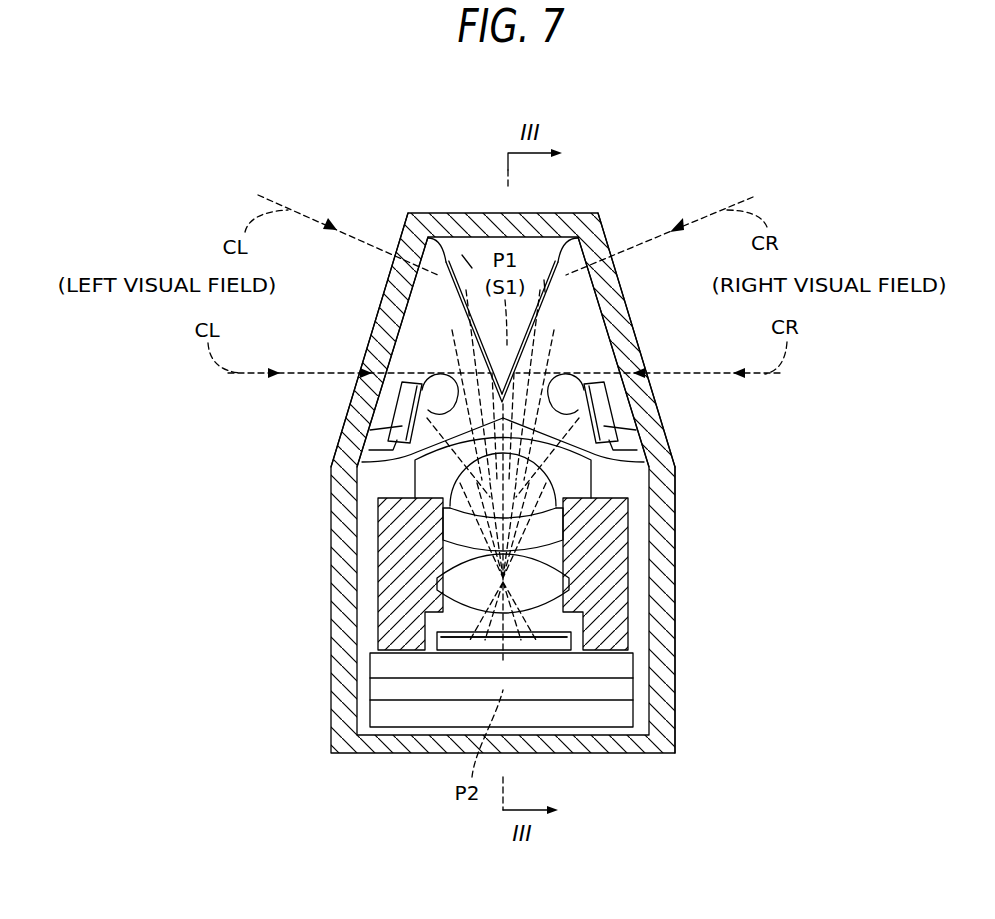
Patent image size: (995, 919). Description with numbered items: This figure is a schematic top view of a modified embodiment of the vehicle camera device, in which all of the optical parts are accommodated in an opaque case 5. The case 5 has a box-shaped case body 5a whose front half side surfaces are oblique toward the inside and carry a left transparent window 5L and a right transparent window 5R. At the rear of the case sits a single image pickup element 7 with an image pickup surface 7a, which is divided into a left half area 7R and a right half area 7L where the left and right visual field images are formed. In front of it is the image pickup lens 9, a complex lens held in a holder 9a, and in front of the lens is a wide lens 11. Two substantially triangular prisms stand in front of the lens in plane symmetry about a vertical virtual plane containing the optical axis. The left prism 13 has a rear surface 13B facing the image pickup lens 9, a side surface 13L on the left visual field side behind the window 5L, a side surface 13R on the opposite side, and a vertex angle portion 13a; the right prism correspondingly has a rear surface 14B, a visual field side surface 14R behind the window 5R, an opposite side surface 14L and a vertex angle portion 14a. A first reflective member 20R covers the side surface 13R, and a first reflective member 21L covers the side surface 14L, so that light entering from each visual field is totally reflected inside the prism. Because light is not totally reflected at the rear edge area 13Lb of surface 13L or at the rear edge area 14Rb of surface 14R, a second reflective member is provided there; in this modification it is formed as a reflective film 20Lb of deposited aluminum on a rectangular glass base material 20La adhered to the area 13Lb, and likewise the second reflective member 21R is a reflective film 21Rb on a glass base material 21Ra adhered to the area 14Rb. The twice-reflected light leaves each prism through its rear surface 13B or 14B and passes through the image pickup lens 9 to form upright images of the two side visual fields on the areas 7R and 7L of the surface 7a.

The case 5 is at (683, 647).
The left transparent window 5L is at (395, 300).
The right transparent window 5R is at (620, 303).
The case body 5a is at (667, 568).
The image pickup element 7 is at (415, 643).
The image pickup surface 7a is at (395, 630).
The right half area of lower half area 7L is at (470, 637).
The left half area of lower half area 7R is at (540, 633).
The image pickup lens 9 is at (470, 573).
The holder 9a is at (392, 595).
The wide lens 11 is at (380, 443).
The prism 13 is at (430, 296).
The vertex angle portion 13a is at (413, 230).
The rear surface 13B is at (430, 482).
The prism side surface 13L is at (430, 347).
The side surface 13R is at (458, 235).
The rear edge area 13Lb is at (405, 385).
The vertex angle portion 14a is at (593, 227).
The rear surface 14B is at (600, 455).
The side surface 14L is at (548, 243).
The prism side surface 14R is at (582, 347).
The rear edge area 14Rb is at (612, 392).
The first reflective member 20R is at (472, 268).
The base material 20La is at (403, 422).
The reflective film 20Lb is at (385, 460).
The first reflective member 21L is at (545, 292).
The second reflective member 21R is at (607, 425).
The base material 21Ra is at (634, 438).
The reflective film 21Rb is at (652, 462).